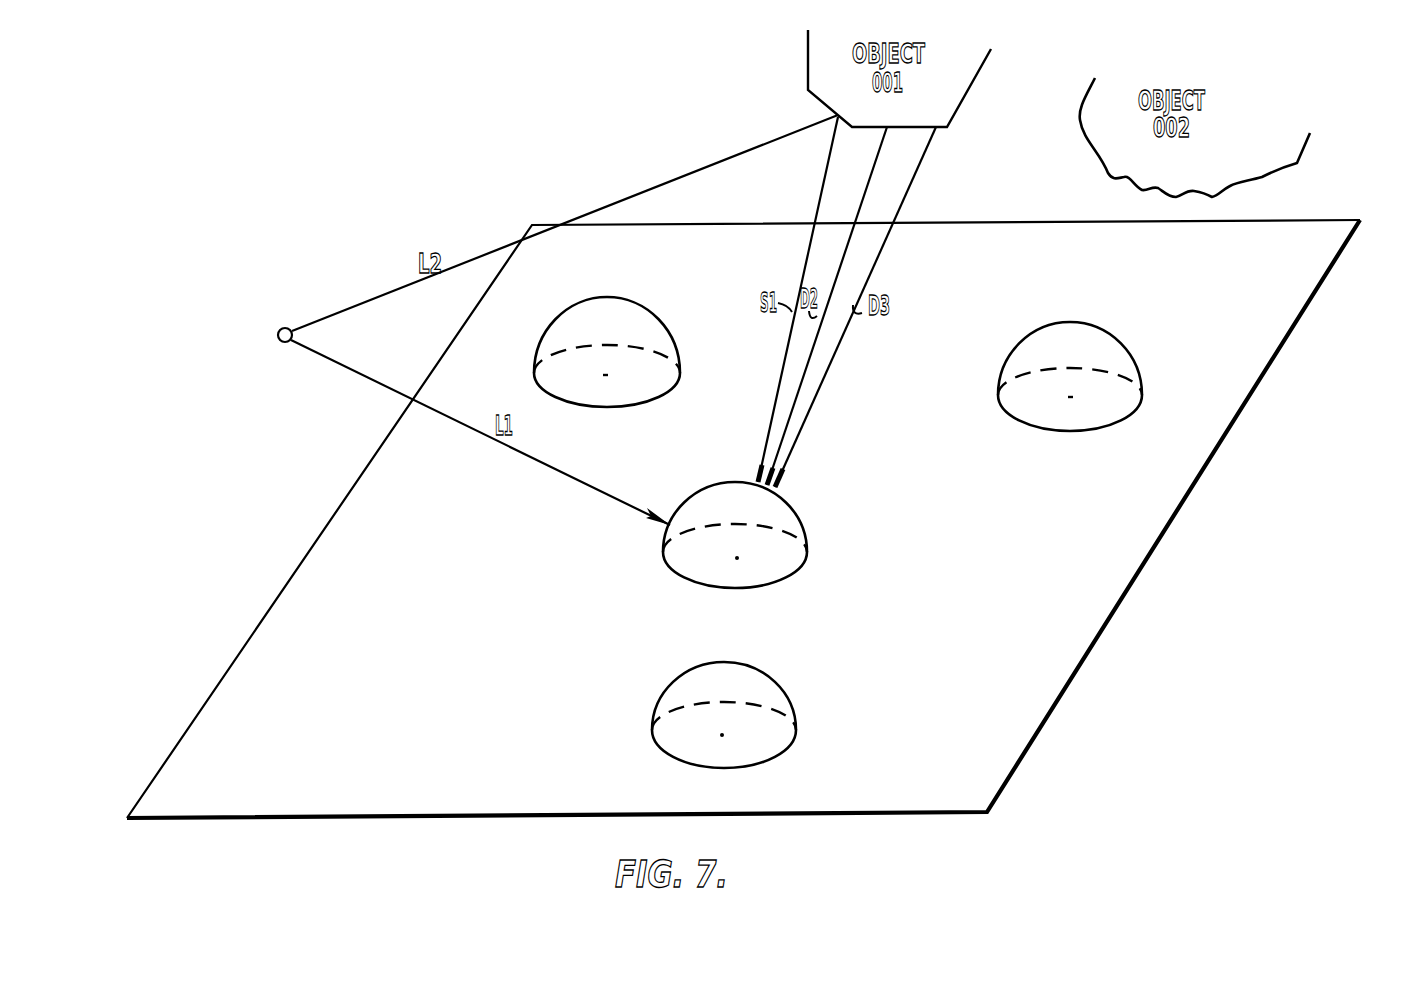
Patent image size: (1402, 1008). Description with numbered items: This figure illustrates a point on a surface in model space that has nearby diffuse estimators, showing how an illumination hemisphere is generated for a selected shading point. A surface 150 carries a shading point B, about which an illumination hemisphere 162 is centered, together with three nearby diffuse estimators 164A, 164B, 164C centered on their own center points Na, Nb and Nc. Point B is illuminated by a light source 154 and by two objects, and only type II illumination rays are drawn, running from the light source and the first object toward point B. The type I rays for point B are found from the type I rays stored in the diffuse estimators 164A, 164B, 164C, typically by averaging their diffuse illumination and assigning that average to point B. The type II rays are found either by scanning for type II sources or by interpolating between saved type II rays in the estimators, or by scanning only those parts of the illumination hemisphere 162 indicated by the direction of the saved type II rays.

The surface 150 is at (1354, 223).
The light source 154 is at (279, 344).
The illumination hemisphere 162 is at (793, 508).
The nearby diffuse estimator 164A is at (657, 313).
The nearby diffuse estimator 164B is at (1123, 338).
The nearby diffuse estimator 164C is at (773, 677).